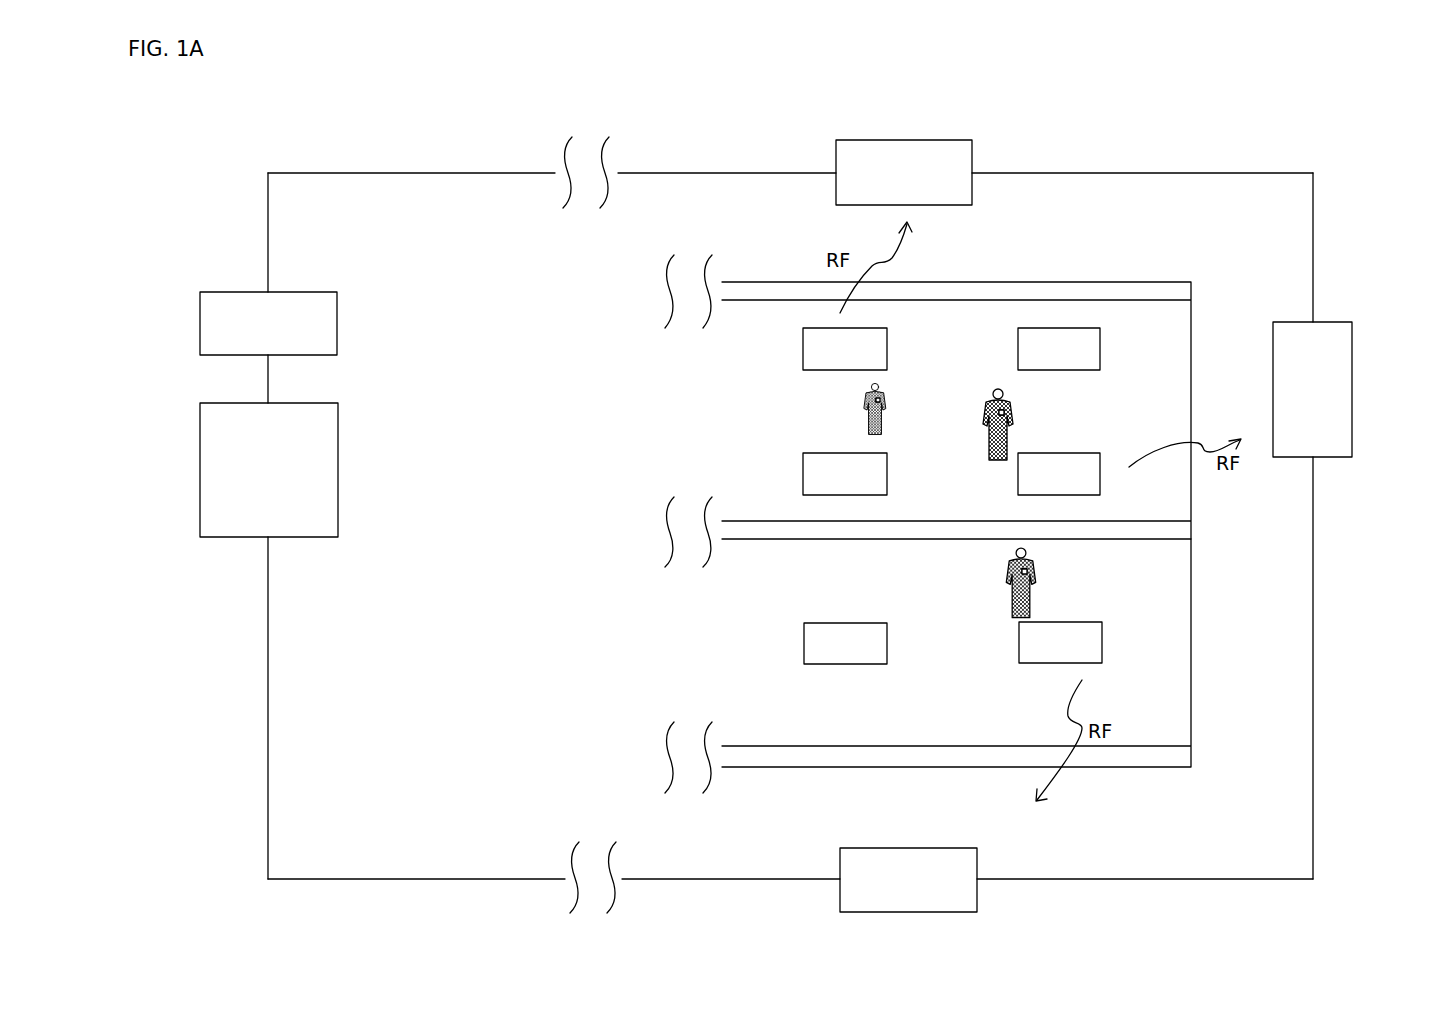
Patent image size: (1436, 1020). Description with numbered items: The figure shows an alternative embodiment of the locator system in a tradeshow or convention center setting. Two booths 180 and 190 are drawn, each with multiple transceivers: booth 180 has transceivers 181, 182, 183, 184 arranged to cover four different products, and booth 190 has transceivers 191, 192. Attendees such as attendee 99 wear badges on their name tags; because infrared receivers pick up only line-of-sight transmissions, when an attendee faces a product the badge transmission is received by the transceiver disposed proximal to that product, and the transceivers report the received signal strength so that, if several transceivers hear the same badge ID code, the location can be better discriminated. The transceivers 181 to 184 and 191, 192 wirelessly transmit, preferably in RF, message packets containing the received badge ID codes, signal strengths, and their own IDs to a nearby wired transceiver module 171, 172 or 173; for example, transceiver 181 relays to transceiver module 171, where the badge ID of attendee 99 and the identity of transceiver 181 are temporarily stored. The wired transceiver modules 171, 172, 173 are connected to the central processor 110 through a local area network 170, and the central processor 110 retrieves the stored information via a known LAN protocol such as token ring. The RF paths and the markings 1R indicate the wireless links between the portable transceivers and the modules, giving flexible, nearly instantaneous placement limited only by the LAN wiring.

The central processor 110 is at (338, 452).
The local area network (LAN) 170 is at (337, 318).
The transceiver module 171 is at (915, 140).
The transceiver module 172 is at (1352, 368).
The transceiver module 173 is at (977, 898).
The booth 180 is at (968, 331).
The transceiver 181 is at (887, 350).
The transceiver 182 is at (1053, 370).
The transceiver 183 is at (1018, 482).
The transceiver 184 is at (867, 495).
The booth 190 is at (952, 581).
The transceiver 191 is at (867, 664).
The transceiver 192 is at (1019, 653).
The attendee 99 is at (900, 405).
The RF tag / reader 1R is at (842, 377).